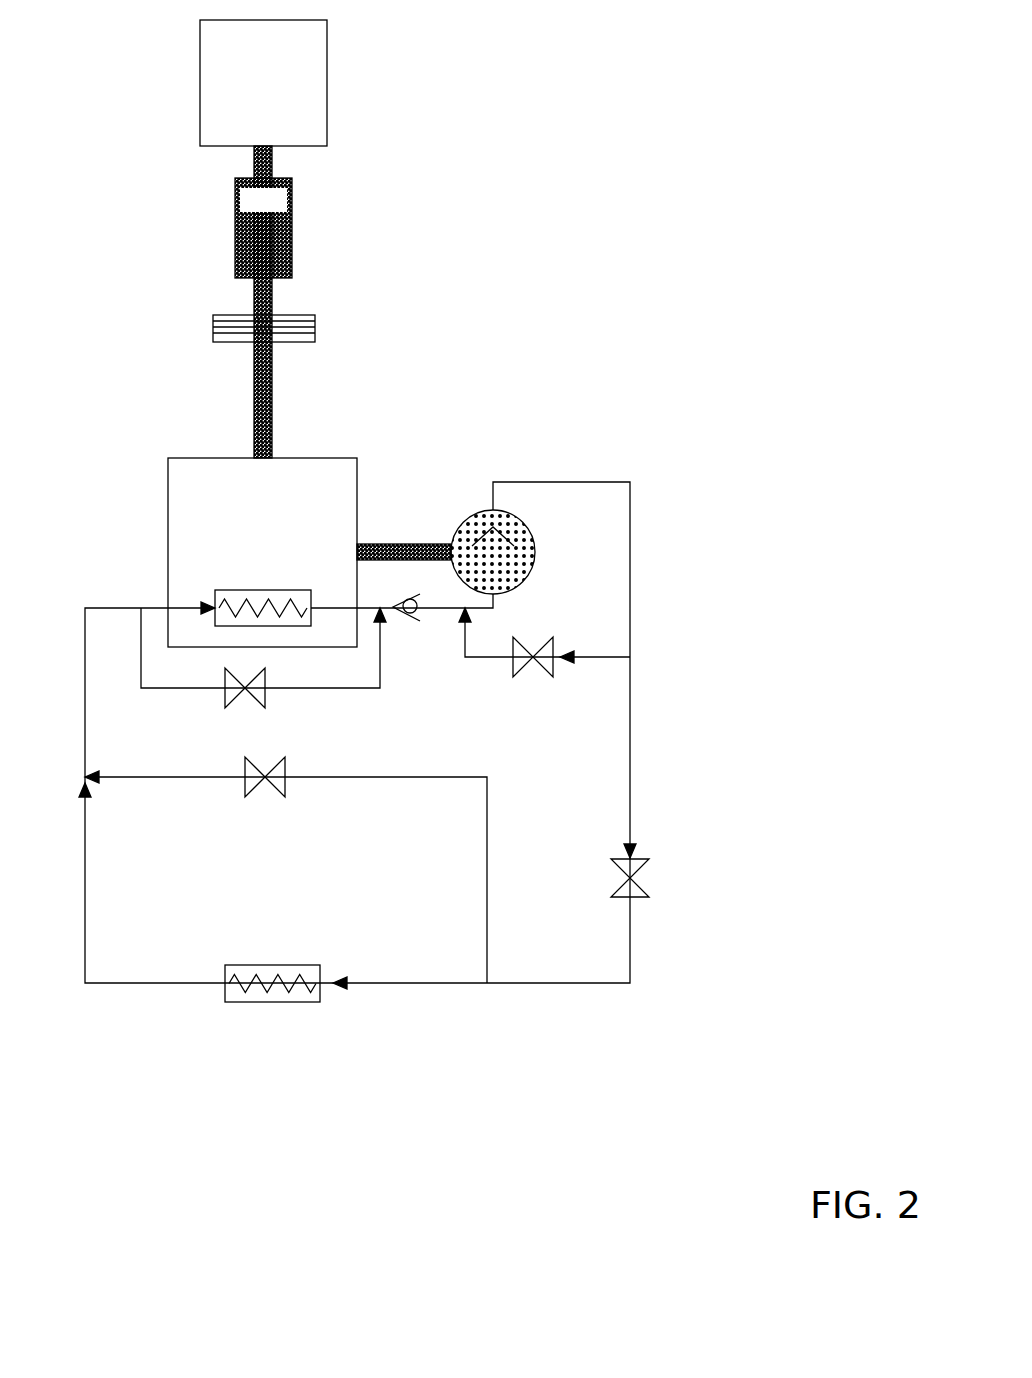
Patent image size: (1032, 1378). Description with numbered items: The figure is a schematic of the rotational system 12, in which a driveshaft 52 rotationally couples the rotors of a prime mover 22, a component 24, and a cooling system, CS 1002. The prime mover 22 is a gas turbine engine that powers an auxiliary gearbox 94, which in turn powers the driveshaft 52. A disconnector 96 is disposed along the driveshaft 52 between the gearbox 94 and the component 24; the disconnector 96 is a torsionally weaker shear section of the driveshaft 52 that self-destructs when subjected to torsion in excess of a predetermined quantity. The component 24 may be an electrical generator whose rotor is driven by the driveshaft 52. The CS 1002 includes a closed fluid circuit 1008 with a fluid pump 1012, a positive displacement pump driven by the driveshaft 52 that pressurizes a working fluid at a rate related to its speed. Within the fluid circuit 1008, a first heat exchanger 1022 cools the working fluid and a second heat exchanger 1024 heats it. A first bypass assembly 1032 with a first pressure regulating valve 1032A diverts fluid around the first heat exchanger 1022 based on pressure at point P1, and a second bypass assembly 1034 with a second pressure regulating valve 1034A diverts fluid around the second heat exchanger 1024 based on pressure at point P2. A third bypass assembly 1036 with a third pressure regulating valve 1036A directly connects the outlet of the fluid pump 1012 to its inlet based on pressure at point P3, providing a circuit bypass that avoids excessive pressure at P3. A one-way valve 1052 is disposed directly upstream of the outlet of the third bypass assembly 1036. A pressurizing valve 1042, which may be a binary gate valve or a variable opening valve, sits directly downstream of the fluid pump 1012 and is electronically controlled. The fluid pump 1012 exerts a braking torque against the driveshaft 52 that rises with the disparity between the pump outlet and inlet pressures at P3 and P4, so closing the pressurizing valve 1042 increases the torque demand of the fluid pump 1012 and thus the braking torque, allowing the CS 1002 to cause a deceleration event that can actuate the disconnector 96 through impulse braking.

The prime mover 22 is at (263, 83).
The driveshaft 52 is at (254, 362).
The auxiliary gearbox 94 is at (263, 228).
The disconnector 96 is at (315, 328).
The component 24 is at (262, 552).
The closed fluid circuit 1008 is at (632, 983).
The second heat exchanger 1024 is at (212, 592).
The first heat exchanger 1022 is at (290, 1002).
The fluid pump 1012 is at (505, 520).
The CS 1002 is at (705, 518).
The rotational system 12 is at (815, 88).
The one-way valve 1052 is at (412, 620).
The third bypass assembly 1036 is at (495, 657).
The third pressure regulating valve 1036A is at (533, 677).
The second bypass assembly 1034 is at (157, 688).
The second pressure regulating valve 1034A is at (255, 697).
The first bypass assembly 1032 is at (345, 777).
The first pressure regulating valve 1032A is at (245, 787).
The pressurizing valve 1042 is at (648, 860).
The point P1 is at (510, 985).
The point P2 is at (85, 625).
The point P3 is at (632, 640).
The point P4 is at (440, 598).